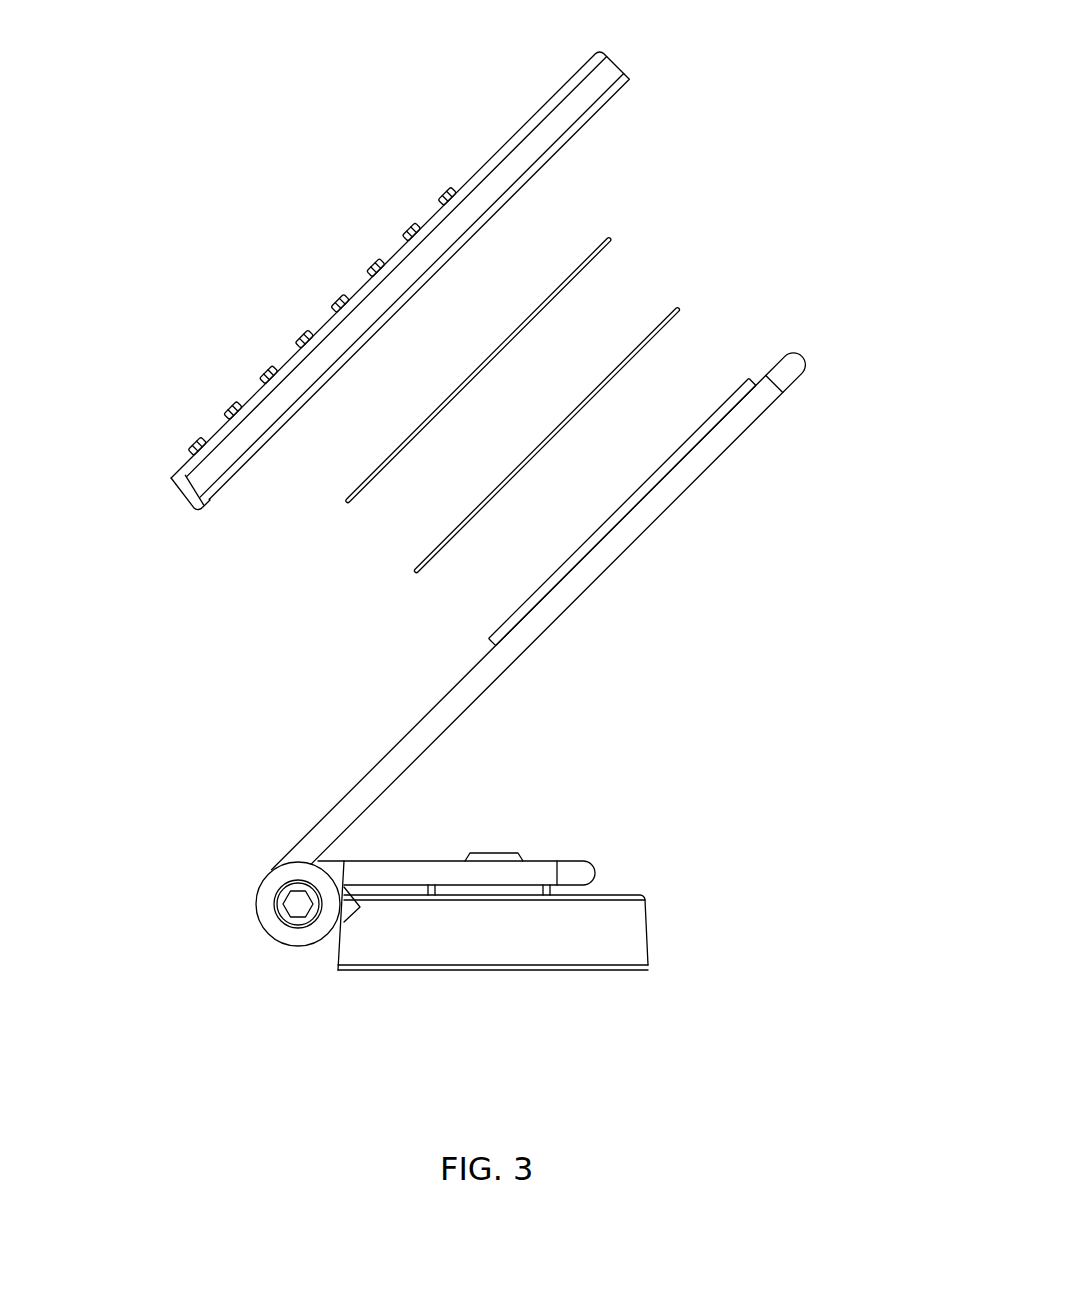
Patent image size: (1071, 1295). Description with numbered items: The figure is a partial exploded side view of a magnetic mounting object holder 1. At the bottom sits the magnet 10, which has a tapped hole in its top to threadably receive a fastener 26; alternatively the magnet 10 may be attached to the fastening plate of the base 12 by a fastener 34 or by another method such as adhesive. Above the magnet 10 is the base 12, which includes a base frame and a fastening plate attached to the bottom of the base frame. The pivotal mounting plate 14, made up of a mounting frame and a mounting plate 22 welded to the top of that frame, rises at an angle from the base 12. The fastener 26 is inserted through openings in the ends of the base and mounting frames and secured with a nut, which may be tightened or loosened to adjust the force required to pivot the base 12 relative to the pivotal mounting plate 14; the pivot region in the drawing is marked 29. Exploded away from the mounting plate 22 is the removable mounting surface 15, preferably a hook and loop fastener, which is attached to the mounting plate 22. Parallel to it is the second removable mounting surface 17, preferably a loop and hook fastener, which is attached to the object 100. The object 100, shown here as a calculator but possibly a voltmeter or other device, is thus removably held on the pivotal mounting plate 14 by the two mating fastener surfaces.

The magnetic mounting object holder 1 is at (150, 712).
The object 100 is at (620, 63).
The second removable mounting surface 17 is at (610, 238).
The removable mounting surface 15 is at (678, 308).
The pivotal mounting plate 14 is at (598, 588).
The mounting plate 22 is at (660, 464).
The hinge 29 is at (258, 903).
The fastener 26 is at (300, 918).
The base 12 is at (518, 869).
The fastener 34 is at (498, 853).
The magnet 10 is at (648, 925).